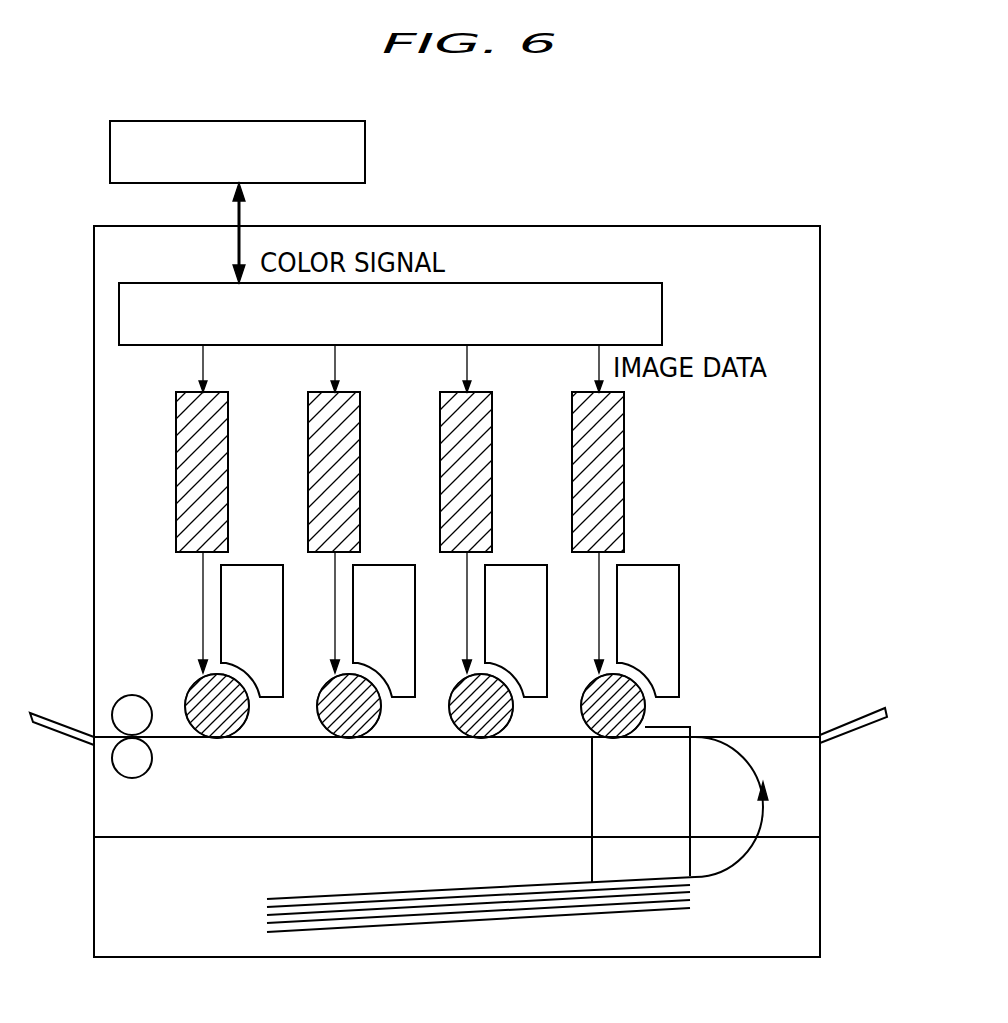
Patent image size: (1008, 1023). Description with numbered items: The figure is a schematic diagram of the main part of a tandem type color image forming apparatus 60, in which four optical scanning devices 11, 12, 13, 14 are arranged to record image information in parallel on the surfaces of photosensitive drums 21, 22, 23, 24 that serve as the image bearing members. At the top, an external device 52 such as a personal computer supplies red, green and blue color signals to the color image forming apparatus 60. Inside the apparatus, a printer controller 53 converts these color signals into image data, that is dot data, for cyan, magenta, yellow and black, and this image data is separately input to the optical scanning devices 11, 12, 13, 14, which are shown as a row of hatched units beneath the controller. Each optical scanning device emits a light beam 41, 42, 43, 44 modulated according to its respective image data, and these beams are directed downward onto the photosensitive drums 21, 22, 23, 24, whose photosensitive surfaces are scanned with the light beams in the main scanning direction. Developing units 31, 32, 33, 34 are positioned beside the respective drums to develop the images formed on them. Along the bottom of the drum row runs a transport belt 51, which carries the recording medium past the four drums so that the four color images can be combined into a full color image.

The optical scanning device 11 is at (190, 436).
The optical scanning device 12 is at (322, 436).
The optical scanning device 13 is at (454, 436).
The optical scanning device 14 is at (582, 436).
The photosensitive drum 21 is at (216, 734).
The photosensitive drum 22 is at (348, 734).
The photosensitive drum 23 is at (480, 734).
The photosensitive drum 24 is at (617, 726).
The developing unit 31 is at (262, 568).
The developing unit 32 is at (394, 568).
The developing unit 33 is at (526, 568).
The developing unit 34 is at (658, 568).
The light beam 41 is at (203, 626).
The light beam 42 is at (335, 626).
The light beam 43 is at (467, 626).
The light beam 44 is at (599, 626).
The transport belt 51 is at (739, 752).
The external device 52 is at (365, 152).
The printer controller 53 is at (662, 310).
The color image forming apparatus 60 is at (737, 226).